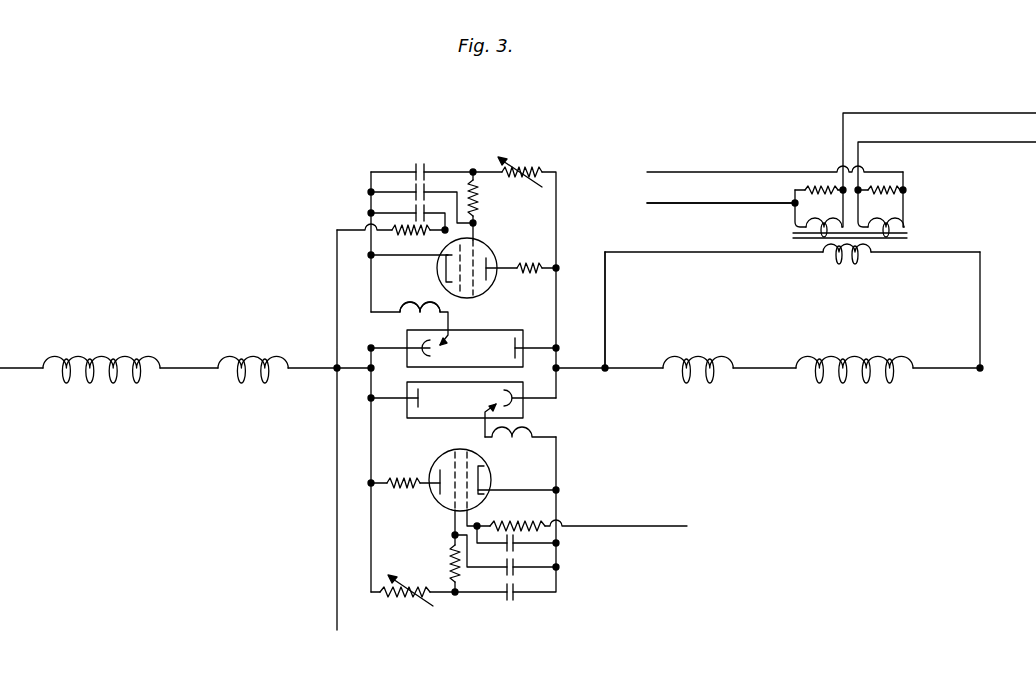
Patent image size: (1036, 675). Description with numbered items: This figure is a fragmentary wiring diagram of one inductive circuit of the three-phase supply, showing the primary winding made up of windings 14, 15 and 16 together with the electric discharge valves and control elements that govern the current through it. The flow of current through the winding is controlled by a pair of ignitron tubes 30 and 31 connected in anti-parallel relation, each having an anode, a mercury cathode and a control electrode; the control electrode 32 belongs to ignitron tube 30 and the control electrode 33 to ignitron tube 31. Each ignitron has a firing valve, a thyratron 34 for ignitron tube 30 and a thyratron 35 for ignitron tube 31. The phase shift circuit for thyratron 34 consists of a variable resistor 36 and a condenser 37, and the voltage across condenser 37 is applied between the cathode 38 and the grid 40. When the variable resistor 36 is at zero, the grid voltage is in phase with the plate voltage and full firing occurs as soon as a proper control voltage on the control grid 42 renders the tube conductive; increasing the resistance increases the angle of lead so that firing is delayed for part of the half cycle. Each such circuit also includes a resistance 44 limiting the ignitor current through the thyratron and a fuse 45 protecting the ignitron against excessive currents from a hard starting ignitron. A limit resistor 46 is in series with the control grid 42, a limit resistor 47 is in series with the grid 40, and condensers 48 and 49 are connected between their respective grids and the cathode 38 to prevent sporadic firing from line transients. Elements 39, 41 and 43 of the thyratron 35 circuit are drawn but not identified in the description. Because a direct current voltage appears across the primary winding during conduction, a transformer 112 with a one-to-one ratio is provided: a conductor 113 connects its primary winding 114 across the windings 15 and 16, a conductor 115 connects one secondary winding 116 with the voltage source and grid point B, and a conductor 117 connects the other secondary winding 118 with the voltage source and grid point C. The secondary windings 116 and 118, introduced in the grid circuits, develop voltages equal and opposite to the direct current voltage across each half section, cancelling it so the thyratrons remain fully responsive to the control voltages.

The winding 14 is at (92, 383).
The winding 15 is at (242, 383).
The winding 16 is at (843, 383).
The ignitron tube 30 is at (479, 335).
The ignitron tube 31 is at (441, 415).
The control electrode 32 is at (448, 328).
The control electrode 33 is at (492, 410).
The thyratron 34 is at (459, 264).
The thyratron 35 is at (459, 480).
The variable resistor 36 is at (527, 165).
The condenser 37 is at (420, 163).
The cathode 38 is at (445, 267).
The cathode 39 is at (482, 473).
The grid 40 is at (478, 289).
The resistor 41 is at (453, 502).
The control grid 42 is at (477, 296).
The heater coil 43 is at (556, 440).
The resistance 44 is at (530, 264).
The fuse 45 is at (420, 304).
The limit resistor 46 is at (397, 228).
The limit resistor 47 is at (480, 190).
The condenser 48 is at (417, 208).
The condenser 49 is at (417, 187).
The transformer 112 is at (875, 222).
The conductor 113 is at (710, 253).
The primary winding 114 is at (845, 260).
The conductor 115 is at (668, 203).
The secondary winding 116 is at (817, 210).
The conductor 117 is at (713, 172).
The secondary winding 118 is at (885, 212).